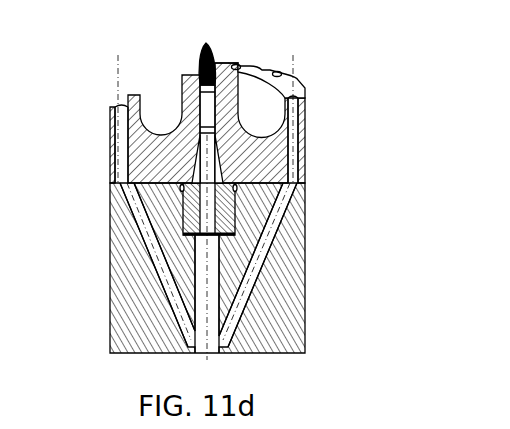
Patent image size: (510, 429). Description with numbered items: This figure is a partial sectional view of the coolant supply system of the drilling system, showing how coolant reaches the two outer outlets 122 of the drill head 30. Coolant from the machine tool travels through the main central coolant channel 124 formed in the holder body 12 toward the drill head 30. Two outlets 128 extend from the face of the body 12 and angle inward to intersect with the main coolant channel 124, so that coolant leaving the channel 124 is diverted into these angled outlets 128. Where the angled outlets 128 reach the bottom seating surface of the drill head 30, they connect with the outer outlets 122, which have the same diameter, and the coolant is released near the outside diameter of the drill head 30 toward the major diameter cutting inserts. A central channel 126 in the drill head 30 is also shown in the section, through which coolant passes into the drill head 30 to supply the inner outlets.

The holder body 12 is at (98, 322).
The drill head 30 is at (325, 127).
The outer outlets 122 is at (122, 105).
The main central coolant channel 124 is at (205, 319).
The central channel 126 is at (213, 162).
The angled outlets 128 is at (145, 236).